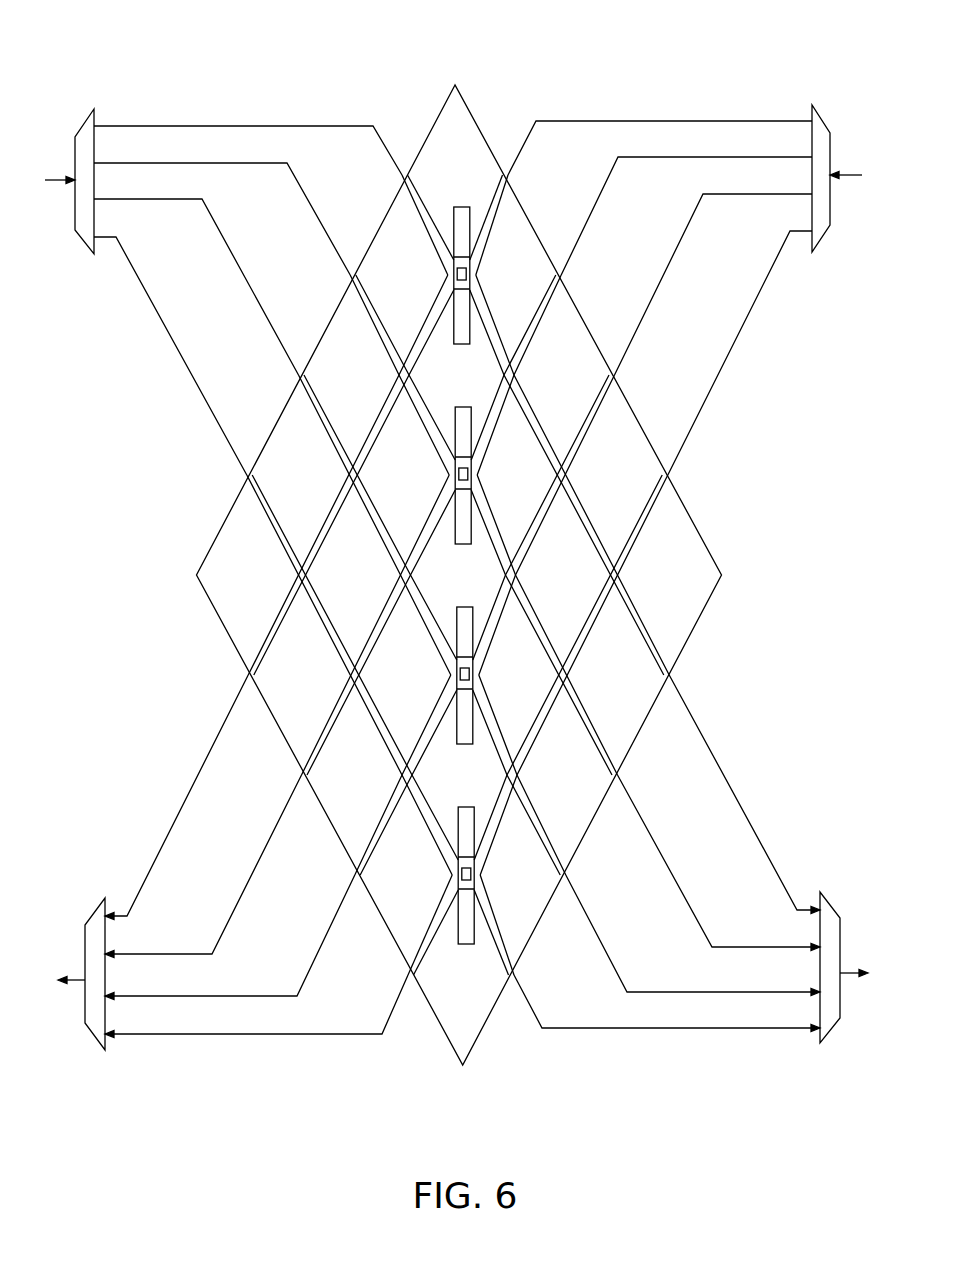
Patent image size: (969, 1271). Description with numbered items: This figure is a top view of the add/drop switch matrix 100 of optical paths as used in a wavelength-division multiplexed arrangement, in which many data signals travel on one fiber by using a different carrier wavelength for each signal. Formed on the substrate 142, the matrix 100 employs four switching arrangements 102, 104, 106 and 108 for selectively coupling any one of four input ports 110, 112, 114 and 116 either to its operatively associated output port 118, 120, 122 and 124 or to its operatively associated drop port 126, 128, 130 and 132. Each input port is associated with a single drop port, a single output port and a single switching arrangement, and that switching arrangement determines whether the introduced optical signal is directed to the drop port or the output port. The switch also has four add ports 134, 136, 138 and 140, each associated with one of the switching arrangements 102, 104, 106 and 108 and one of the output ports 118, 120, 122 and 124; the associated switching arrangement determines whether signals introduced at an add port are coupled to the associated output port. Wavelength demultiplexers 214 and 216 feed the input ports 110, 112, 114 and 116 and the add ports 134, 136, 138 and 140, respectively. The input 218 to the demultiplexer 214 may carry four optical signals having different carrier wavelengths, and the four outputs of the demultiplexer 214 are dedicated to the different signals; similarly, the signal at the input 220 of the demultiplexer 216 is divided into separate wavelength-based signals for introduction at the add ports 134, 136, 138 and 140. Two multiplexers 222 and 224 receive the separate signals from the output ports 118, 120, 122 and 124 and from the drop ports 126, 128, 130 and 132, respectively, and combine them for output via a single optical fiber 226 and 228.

The matrix of optical paths 100 is at (752, 414).
The switching arrangement 102 is at (463, 247).
The switching arrangement 104 is at (466, 447).
The switching arrangement 106 is at (470, 645).
The switching arrangement 108 is at (474, 848).
The input port 110 is at (400, 172).
The input port 112 is at (347, 274).
The input port 114 is at (296, 374).
The input port 116 is at (244, 471).
The output port 118 is at (250, 652).
The output port 120 is at (302, 760).
The output port 122 is at (352, 862).
The output port 124 is at (410, 965).
The drop port 126 is at (670, 652).
The drop port 128 is at (616, 760).
The drop port 130 is at (562, 862).
The drop port 132 is at (510, 965).
The add port 134 is at (510, 172).
The add port 136 is at (565, 274).
The add port 138 is at (614, 374).
The add port 140 is at (669, 471).
The substrate 142 is at (482, 128).
The wavelength demultiplexer 214 is at (90, 128).
The wavelength demultiplexer 216 is at (818, 128).
The input 218 is at (58, 183).
The input 220 is at (852, 187).
The multiplexer 222 is at (98, 912).
The multiplexer 224 is at (828, 912).
The optical fiber 226 is at (74, 990).
The optical fiber 228 is at (852, 982).